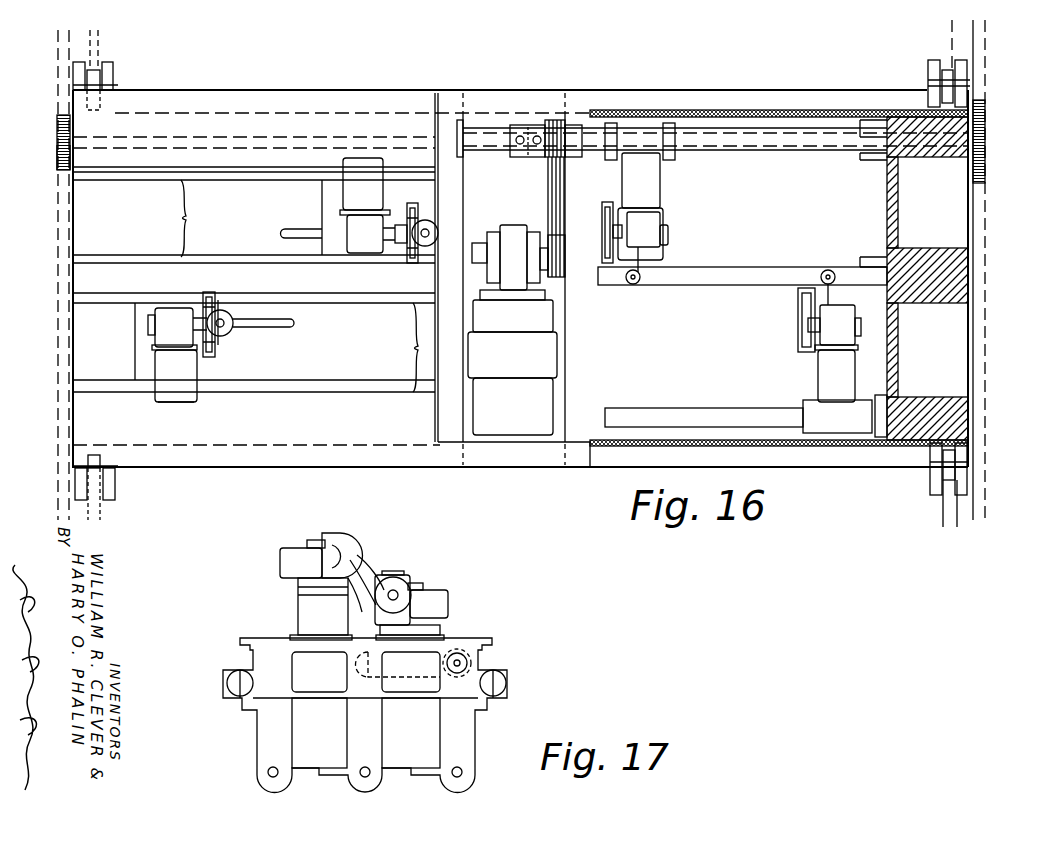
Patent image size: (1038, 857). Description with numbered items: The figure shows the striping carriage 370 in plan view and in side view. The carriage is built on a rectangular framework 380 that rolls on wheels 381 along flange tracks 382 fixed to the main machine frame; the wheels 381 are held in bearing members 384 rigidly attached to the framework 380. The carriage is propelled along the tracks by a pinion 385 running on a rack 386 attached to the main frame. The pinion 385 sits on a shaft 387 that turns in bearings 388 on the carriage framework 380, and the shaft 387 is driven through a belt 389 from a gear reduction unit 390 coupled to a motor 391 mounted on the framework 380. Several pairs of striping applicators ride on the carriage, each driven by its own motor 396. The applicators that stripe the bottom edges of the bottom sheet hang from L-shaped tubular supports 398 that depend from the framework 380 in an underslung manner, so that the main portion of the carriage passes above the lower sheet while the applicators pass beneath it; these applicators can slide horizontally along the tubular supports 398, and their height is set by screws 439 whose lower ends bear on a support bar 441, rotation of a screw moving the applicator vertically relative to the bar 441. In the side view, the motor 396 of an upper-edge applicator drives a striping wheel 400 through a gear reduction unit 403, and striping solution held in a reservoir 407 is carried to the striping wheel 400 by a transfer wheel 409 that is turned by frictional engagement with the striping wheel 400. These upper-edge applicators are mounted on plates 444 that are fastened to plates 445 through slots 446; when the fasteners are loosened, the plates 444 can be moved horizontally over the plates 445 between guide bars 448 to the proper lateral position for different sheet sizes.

In FIG. 16, the striping carriage 370 is at (218, 90).
In FIG. 16, the rectangular framework 380 is at (960, 283).
In FIG. 17, the rectangular framework 380 is at (478, 728).
In FIG. 16, the wheels 381 is at (100, 80).
In FIG. 17, the wheels 381 is at (500, 670).
In FIG. 16, the flange tracks 382 is at (97, 35).
In FIG. 16, the bearing members 384 is at (102, 62).
In FIG. 17, the bearing members 384 is at (505, 695).
In FIG. 16, the pinion 385 is at (57, 143).
In FIG. 16, the rack 386 is at (60, 168).
In FIG. 16, the shaft 387 is at (500, 138).
In FIG. 16, the bearings 388 is at (576, 122).
In FIG. 16, the belt 389 is at (563, 190).
In FIG. 16, the gear reduction unit 390 is at (525, 222).
In FIG. 16, the motor 391 is at (553, 357).
In FIG. 16, the motor 396 is at (178, 395).
In FIG. 17, the motor 396 is at (280, 565).
In FIG. 16, the L-shaped tubular supports 398 is at (720, 408).
In FIG. 17, the striping wheel 400 is at (372, 578).
In FIG. 17, the gear reduction unit 403 is at (320, 540).
In FIG. 17, the reservoir 407 is at (380, 612).
In FIG. 17, the transfer wheel 409 is at (345, 535).
In FIG. 16, the screws 439 is at (640, 283).
In FIG. 16, the support bar 441 is at (710, 285).
In FIG. 16, the plates 444 is at (335, 214).
In FIG. 16, the plates 445 is at (243, 233).
In FIG. 16, the slots 446 is at (285, 236).
In FIG. 16, the guide bars 448 is at (280, 286).